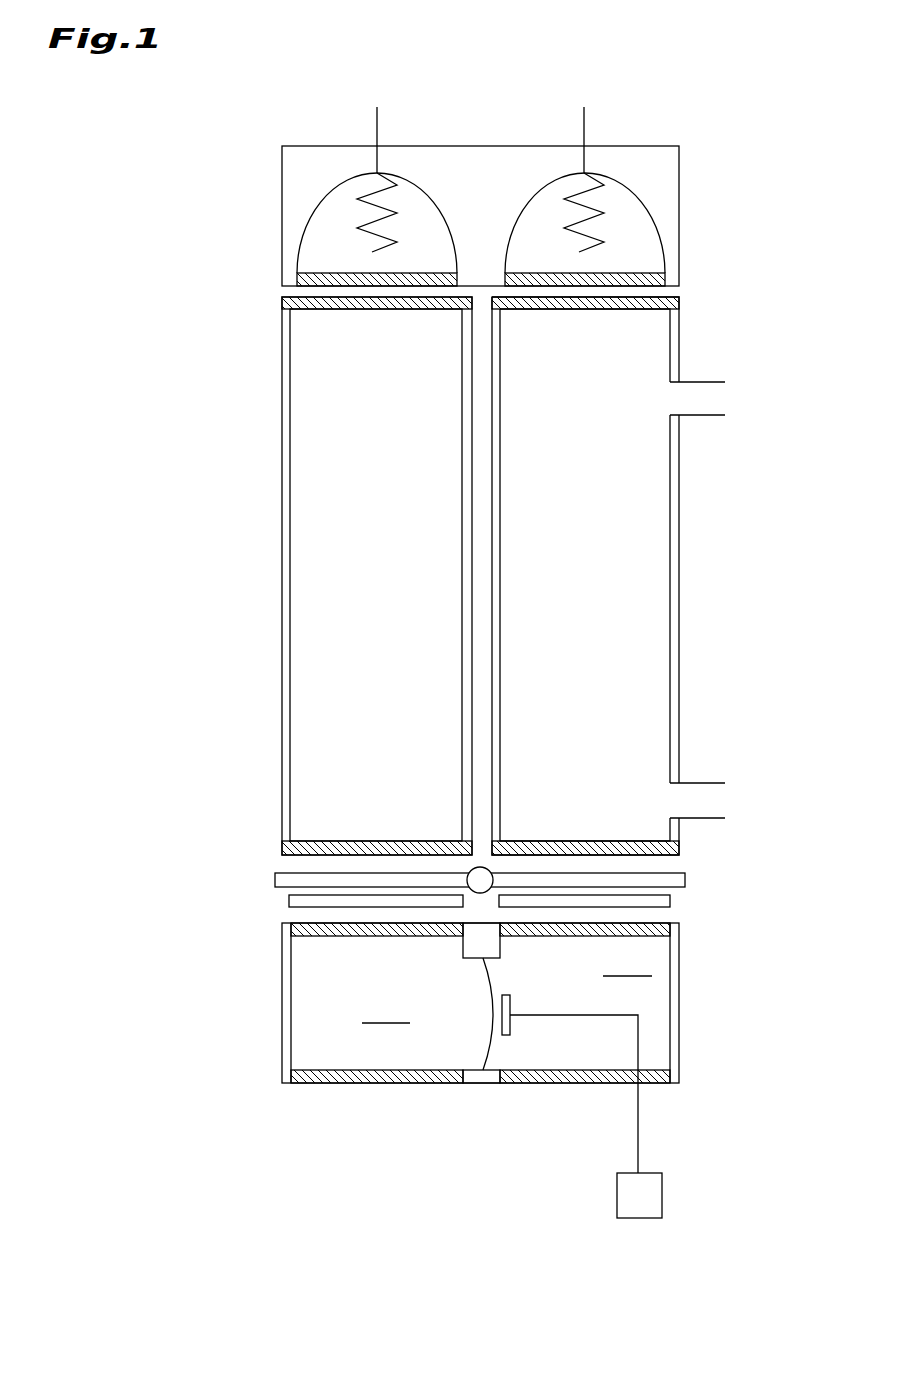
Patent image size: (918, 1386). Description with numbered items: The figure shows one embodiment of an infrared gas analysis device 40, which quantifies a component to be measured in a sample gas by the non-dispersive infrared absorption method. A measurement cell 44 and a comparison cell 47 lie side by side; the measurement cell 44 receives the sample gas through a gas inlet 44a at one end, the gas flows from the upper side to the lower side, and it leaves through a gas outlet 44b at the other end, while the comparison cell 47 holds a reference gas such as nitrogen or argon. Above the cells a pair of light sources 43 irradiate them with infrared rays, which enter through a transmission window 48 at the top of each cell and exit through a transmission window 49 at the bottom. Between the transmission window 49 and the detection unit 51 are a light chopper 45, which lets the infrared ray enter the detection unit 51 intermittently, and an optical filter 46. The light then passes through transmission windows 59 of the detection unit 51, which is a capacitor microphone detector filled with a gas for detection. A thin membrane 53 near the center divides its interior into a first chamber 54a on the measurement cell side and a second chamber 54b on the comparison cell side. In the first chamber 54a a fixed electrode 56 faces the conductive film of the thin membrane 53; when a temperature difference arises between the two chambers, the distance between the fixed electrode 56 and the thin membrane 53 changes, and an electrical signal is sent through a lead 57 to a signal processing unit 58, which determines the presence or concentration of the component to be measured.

The infrared gas analysis device 40 is at (756, 94).
The light source 43 is at (322, 196).
The measurement cell 44 is at (680, 540).
The gas inlet 44a is at (710, 382).
The gas outlet 44b is at (710, 783).
The light chopper 45 is at (686, 880).
The optical filter 46 is at (289, 901).
The comparison cell 47 is at (282, 517).
The transmission window 48 is at (290, 301).
The transmission window 49 is at (290, 848).
The detection unit 51 is at (282, 993).
The thin membrane 53 is at (489, 977).
The first chamber 54a is at (628, 959).
The second chamber 54b is at (388, 1006).
The fixed electrode 56 is at (511, 1027).
The lead 57 is at (640, 1123).
The signal processing unit 58 is at (663, 1195).
The transmission window 59 is at (290, 931).